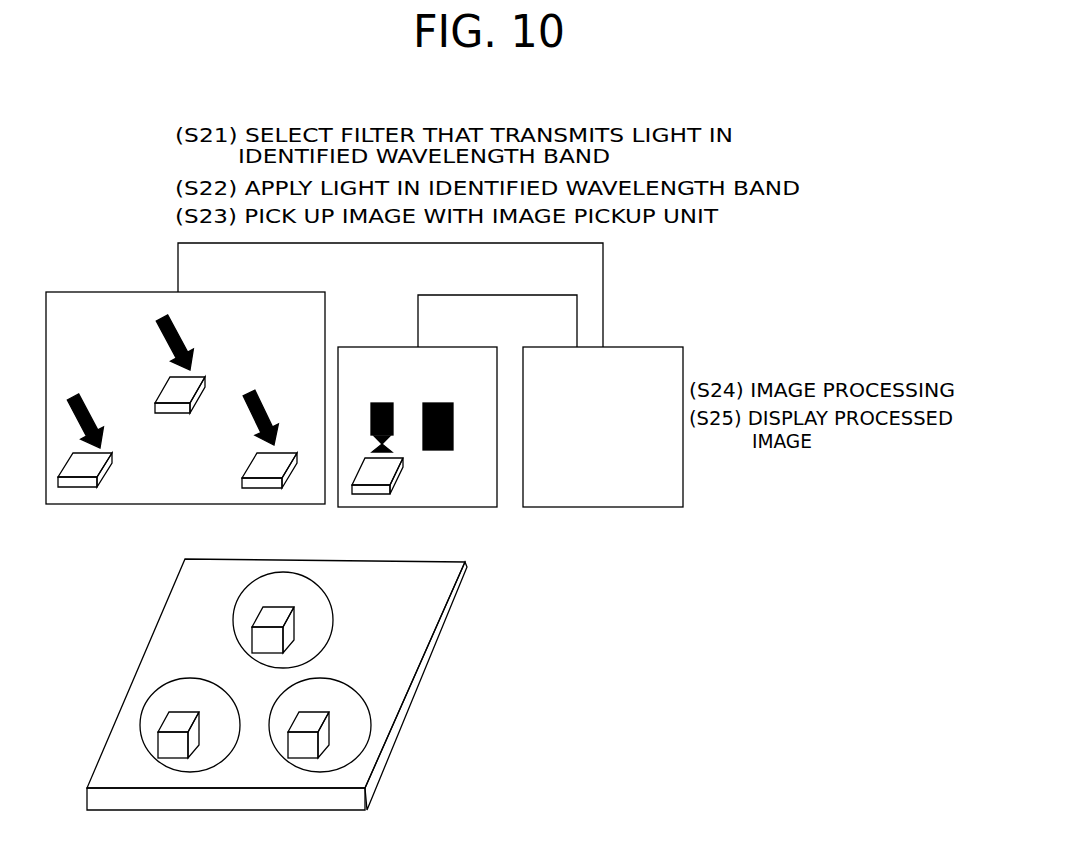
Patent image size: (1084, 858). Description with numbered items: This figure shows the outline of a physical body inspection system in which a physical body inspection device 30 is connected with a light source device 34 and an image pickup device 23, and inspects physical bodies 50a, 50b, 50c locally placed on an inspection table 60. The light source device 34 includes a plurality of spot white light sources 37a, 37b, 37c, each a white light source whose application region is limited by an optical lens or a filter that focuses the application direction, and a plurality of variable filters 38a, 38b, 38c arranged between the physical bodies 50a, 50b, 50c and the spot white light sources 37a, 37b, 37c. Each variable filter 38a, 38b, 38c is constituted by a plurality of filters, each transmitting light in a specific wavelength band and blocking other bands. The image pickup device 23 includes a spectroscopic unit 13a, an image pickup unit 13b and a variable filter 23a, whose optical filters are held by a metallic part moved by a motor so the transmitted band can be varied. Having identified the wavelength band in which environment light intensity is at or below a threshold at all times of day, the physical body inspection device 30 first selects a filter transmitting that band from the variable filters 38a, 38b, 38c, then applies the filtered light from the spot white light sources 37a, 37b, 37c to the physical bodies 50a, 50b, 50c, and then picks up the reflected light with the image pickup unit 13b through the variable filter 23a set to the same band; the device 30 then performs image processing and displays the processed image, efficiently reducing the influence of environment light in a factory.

The light source device 34 is at (290, 292).
The spot white light source 37a is at (84, 415).
The spot white light source 37b is at (181, 341).
The spot white light source 37c is at (248, 404).
The variable filter 38a is at (102, 468).
The variable filter 38b is at (203, 382).
The variable filter 38c is at (247, 455).
The image pickup device 23 is at (466, 347).
The spectroscopic unit 13a is at (447, 403).
The image pickup unit 13b is at (392, 403).
The variable filter 23a is at (398, 472).
The physical body inspection device 30 is at (652, 347).
The inspection table 60 is at (431, 559).
The physical body 50a is at (174, 712).
The physical body 50b is at (267, 607).
The physical body 50c is at (304, 712).